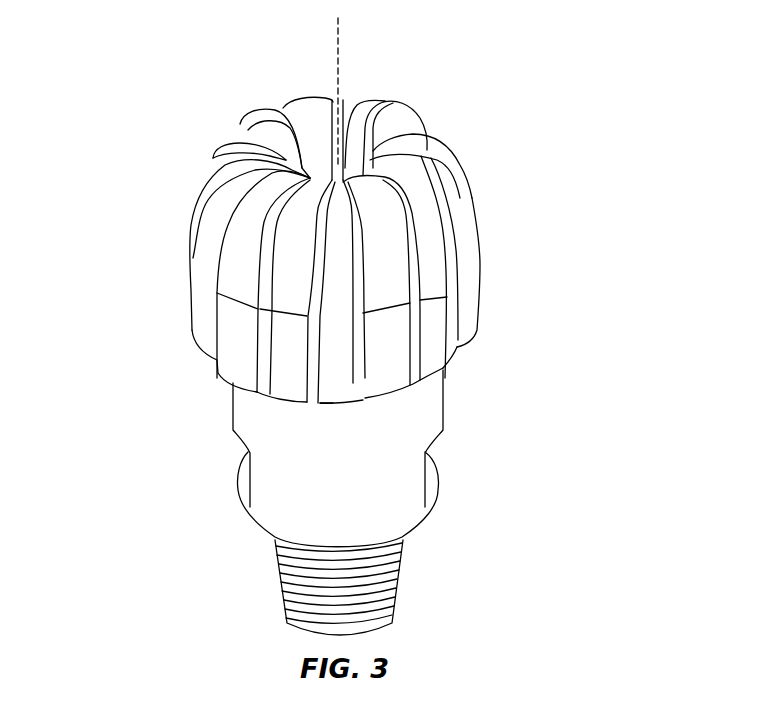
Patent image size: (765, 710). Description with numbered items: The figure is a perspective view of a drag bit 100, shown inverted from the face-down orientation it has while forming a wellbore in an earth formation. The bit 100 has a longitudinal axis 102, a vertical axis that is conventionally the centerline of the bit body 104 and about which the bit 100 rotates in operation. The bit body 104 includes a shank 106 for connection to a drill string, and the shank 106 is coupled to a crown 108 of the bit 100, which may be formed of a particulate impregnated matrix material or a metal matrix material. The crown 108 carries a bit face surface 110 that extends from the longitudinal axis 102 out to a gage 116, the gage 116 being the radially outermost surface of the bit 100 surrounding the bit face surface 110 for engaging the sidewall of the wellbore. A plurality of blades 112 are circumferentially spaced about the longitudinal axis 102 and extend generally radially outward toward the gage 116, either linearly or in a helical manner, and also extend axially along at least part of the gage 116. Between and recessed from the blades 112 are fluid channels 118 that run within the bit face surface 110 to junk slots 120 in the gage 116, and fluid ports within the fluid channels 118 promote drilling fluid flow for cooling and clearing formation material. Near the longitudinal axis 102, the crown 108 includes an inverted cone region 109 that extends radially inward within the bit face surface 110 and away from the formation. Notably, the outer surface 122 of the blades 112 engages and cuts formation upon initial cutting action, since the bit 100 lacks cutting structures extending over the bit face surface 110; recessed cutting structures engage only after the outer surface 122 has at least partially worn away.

The drag bit 100 is at (570, 74).
The longitudinal axis 102 is at (340, 27).
The bit body 104 is at (164, 253).
The shank 106 is at (255, 413).
The crown 108 is at (457, 347).
The inverted cone region 109 is at (323, 152).
The bit face surface 110 is at (432, 106).
The blades 112 is at (473, 189).
The gage 116 is at (497, 253).
The fluid channels 118 is at (337, 252).
The junk slots 120 is at (333, 382).
The outer surface 122 is at (408, 202).